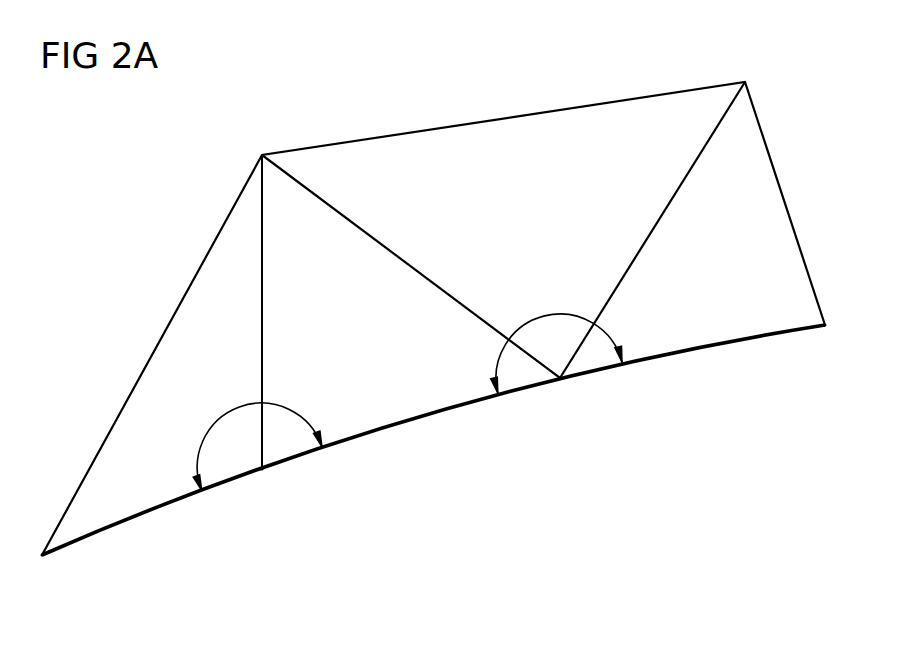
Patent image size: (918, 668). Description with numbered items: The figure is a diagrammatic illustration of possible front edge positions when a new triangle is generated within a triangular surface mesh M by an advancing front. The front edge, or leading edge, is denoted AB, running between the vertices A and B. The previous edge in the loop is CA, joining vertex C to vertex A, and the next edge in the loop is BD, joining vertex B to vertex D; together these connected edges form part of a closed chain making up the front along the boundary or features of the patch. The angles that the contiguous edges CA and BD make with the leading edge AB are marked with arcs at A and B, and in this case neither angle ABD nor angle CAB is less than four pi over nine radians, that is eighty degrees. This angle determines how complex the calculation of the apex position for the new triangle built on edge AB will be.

The triangular surface mesh M is at (207, 160).
The front edge vertex A is at (262, 471).
The front edge vertex B is at (560, 380).
The previous edge vertex C is at (42, 557).
The next edge vertex D is at (824, 328).